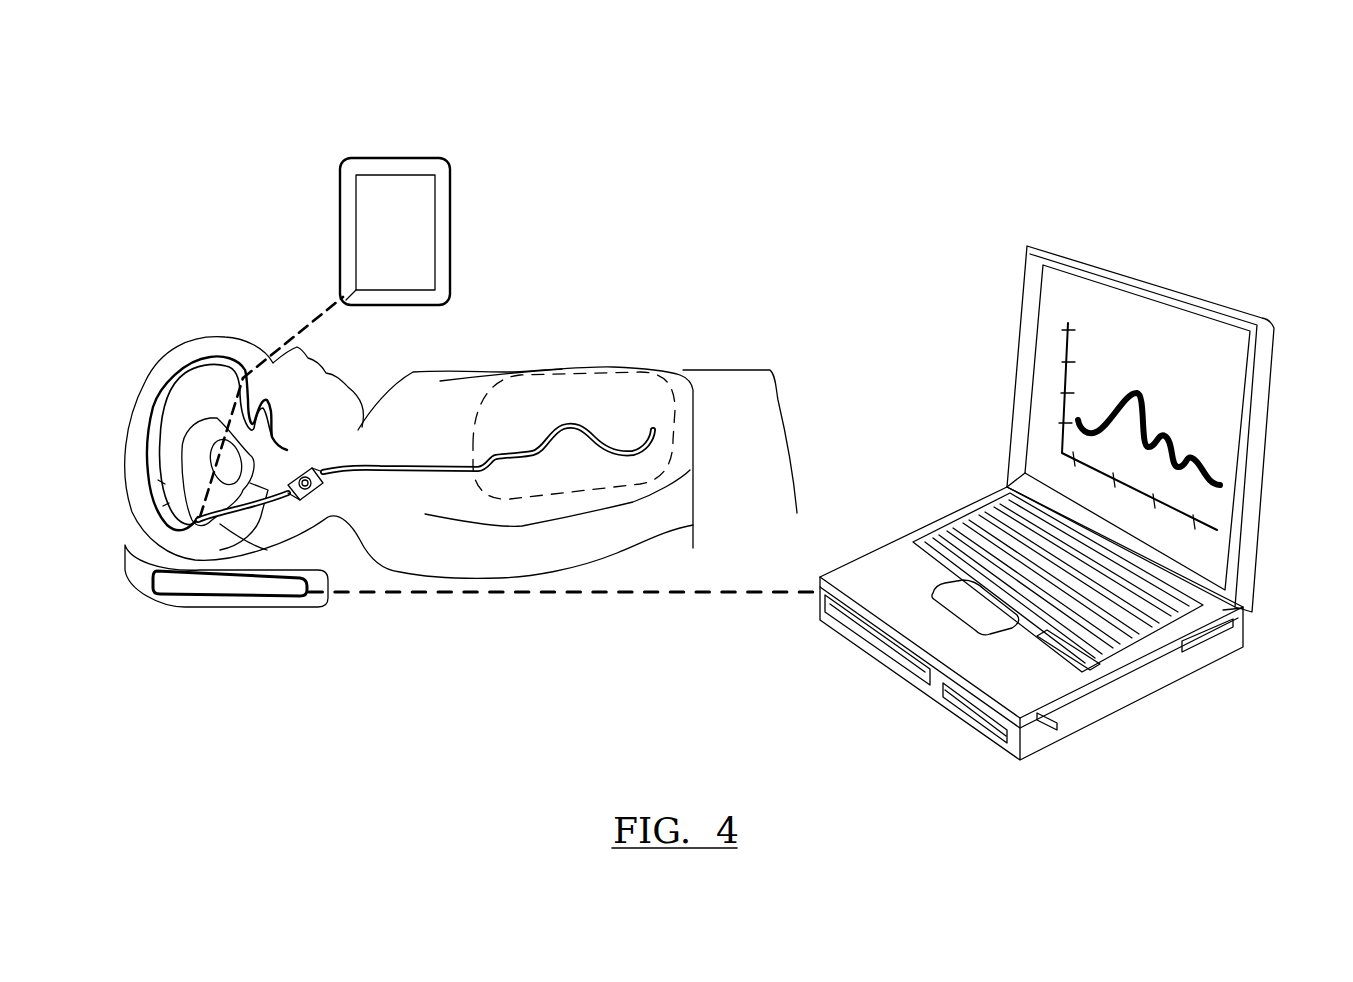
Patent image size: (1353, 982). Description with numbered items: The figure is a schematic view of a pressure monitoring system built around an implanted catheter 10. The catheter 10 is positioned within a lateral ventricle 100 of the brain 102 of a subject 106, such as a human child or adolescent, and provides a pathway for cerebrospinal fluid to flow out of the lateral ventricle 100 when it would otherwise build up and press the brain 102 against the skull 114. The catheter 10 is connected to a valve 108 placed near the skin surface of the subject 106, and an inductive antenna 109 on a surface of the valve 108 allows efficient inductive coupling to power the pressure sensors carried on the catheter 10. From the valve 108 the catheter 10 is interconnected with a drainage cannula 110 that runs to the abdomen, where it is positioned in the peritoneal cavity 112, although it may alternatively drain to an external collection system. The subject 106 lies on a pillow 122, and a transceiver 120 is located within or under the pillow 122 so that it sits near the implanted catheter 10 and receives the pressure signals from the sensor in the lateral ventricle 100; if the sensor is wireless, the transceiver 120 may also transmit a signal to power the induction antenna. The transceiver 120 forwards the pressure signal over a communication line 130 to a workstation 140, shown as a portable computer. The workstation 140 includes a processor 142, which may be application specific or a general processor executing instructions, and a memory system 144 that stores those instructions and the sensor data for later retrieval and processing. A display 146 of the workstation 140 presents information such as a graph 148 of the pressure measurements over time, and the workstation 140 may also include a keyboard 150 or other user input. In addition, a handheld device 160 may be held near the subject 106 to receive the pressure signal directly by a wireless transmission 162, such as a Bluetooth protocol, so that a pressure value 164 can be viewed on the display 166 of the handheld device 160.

The catheter 10 is at (200, 510).
The lateral ventricle 100 is at (197, 512).
The brain 102 is at (163, 458).
The subject 106 is at (210, 305).
The valve 108 is at (300, 502).
The inductive antenna 109 is at (323, 483).
The drainage cannula 110 is at (428, 470).
The peritoneal cavity 112 is at (563, 397).
The skull 114 is at (142, 394).
The transceiver 120 is at (168, 590).
The pillow 122 is at (133, 568).
The communication line 130 is at (610, 600).
The workstation 140 is at (1048, 479).
The processor 142 is at (873, 635).
The memory system 144 is at (960, 717).
The display 146 is at (1075, 300).
The graph 148 is at (1192, 378).
The keyboard 150 is at (980, 537).
The handheld device 160 is at (430, 149).
The transmission 162 is at (298, 325).
The pressure value 164 is at (372, 173).
The display 166 is at (420, 228).